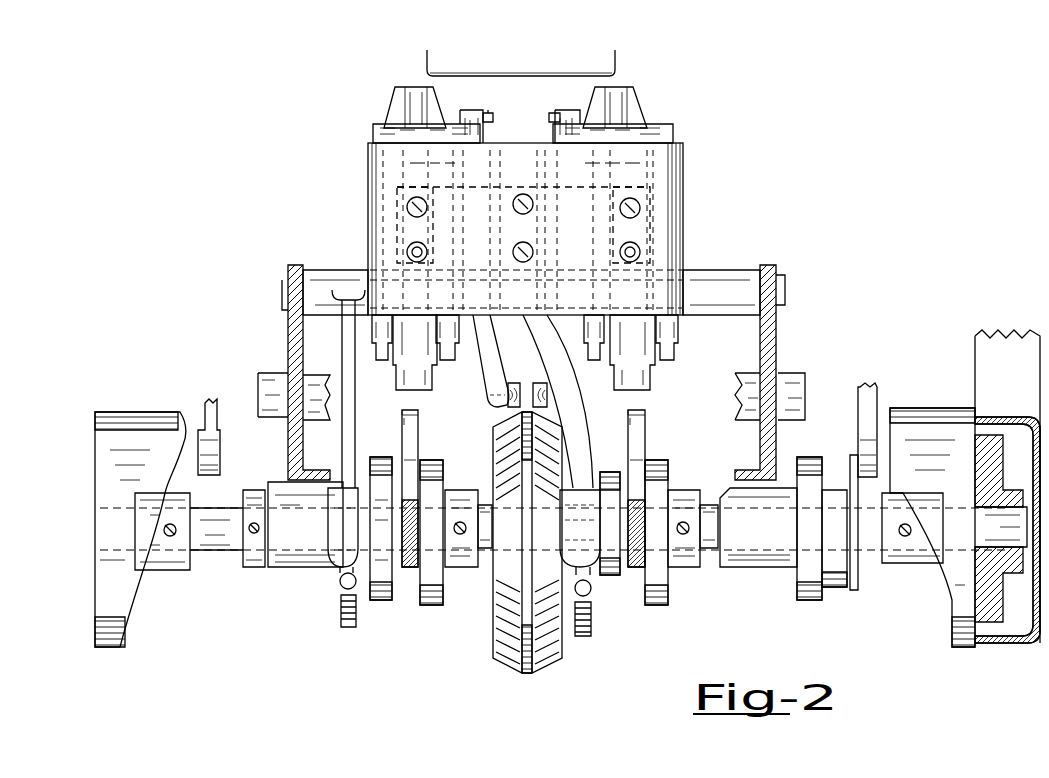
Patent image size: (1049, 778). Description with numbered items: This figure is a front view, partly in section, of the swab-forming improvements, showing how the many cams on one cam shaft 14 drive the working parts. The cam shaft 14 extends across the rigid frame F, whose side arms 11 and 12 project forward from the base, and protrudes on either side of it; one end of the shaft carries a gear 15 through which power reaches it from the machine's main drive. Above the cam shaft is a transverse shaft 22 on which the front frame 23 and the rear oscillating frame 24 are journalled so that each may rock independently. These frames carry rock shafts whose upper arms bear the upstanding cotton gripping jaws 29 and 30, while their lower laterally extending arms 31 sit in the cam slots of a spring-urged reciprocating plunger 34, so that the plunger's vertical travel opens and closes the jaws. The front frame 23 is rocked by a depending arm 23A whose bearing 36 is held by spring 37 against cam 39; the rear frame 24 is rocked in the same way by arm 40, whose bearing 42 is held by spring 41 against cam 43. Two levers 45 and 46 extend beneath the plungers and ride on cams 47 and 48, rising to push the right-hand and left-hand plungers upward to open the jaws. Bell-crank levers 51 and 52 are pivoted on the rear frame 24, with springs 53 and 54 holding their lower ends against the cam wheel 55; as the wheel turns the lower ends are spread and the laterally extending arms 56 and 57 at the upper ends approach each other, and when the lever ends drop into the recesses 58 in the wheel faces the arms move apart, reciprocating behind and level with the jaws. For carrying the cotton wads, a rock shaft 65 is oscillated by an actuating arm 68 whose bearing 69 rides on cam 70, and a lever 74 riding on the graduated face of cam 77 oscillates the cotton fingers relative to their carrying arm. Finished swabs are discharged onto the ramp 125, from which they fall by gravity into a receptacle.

The ramp 125 is at (519, 76).
The upstanding jaw 29 is at (395, 97).
The upstanding jaw 30 is at (430, 97).
The laterally extending arm 57 is at (490, 113).
The laterally extending arm 56 is at (556, 113).
The front frame 23 is at (683, 233).
The spring 53 is at (450, 160).
The spring 54 is at (590, 162).
The rear oscillating frame 24 is at (365, 270).
The transverse shaft 22 is at (786, 290).
The side arm 12 is at (303, 360).
The side arm 11 is at (778, 335).
The frame F is at (760, 352).
The rock shaft 65 is at (806, 378).
The laterally extending arm 31 is at (690, 338).
The reciprocating plunger 34 is at (398, 391).
The bell-crank lever 51 is at (498, 355).
The bell-crank lever 52 is at (560, 352).
The depending arm 23A is at (582, 440).
The recess 58 is at (492, 400).
The cam shaft 14 is at (215, 552).
The cam 77 is at (535, 527).
The lever 74 is at (220, 430).
The arm 40 is at (341, 438).
The bearing 42 is at (358, 545).
The spring 41 is at (339, 612).
The cam 43 is at (385, 602).
The lever 46 is at (418, 447).
The cam 48 is at (432, 606).
The cam wheel 55 is at (530, 674).
The bearing 36 is at (580, 528).
The spring 37 is at (592, 625).
The cam 39 is at (610, 577).
The lever 45 is at (645, 447).
The cam 47 is at (656, 606).
The bearing 69 is at (790, 570).
The cam 70 is at (834, 490).
The actuating arm 68 is at (850, 465).
The gear 15 is at (1003, 598).